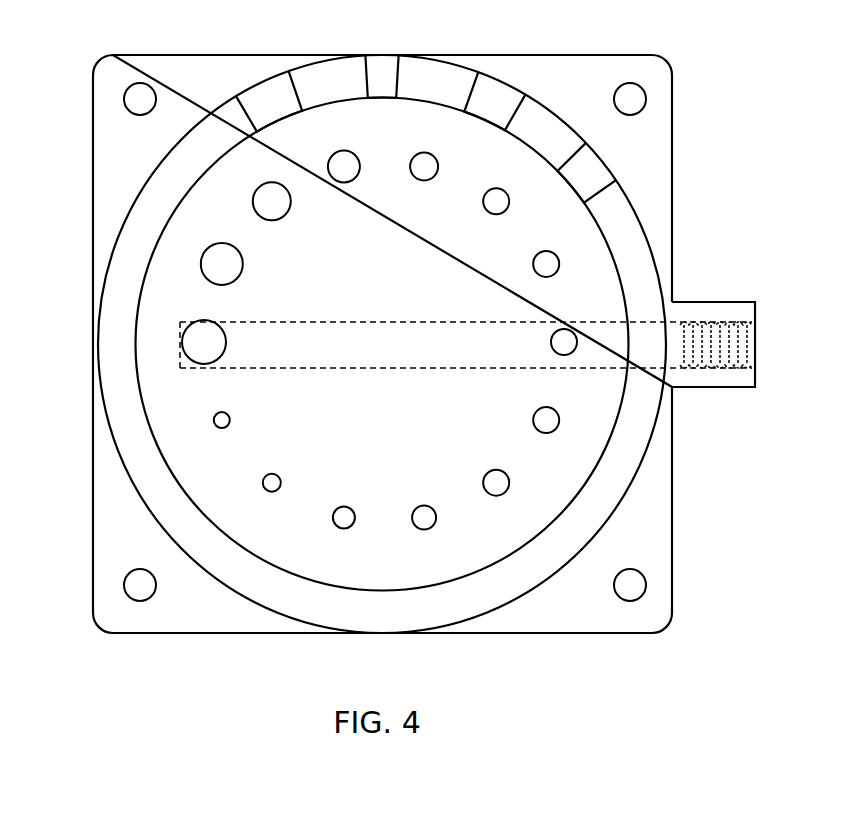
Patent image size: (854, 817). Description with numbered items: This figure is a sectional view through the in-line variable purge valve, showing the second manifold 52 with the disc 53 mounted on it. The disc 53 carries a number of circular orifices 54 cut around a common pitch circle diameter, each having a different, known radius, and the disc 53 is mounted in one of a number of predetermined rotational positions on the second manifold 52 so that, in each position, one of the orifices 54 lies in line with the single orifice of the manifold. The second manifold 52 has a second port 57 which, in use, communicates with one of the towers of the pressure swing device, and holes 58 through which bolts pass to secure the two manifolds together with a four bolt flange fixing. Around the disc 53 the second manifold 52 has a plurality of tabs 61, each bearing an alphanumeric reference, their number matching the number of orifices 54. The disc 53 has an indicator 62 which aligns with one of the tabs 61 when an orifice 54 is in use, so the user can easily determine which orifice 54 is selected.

The second manifold 52 is at (209, 620).
The disc 53 is at (150, 441).
The circular orifices 54 is at (200, 248).
The second port 57 is at (756, 333).
The holes 58 is at (124, 100).
The tabs 61 is at (604, 160).
The indicator 62 is at (403, 68).